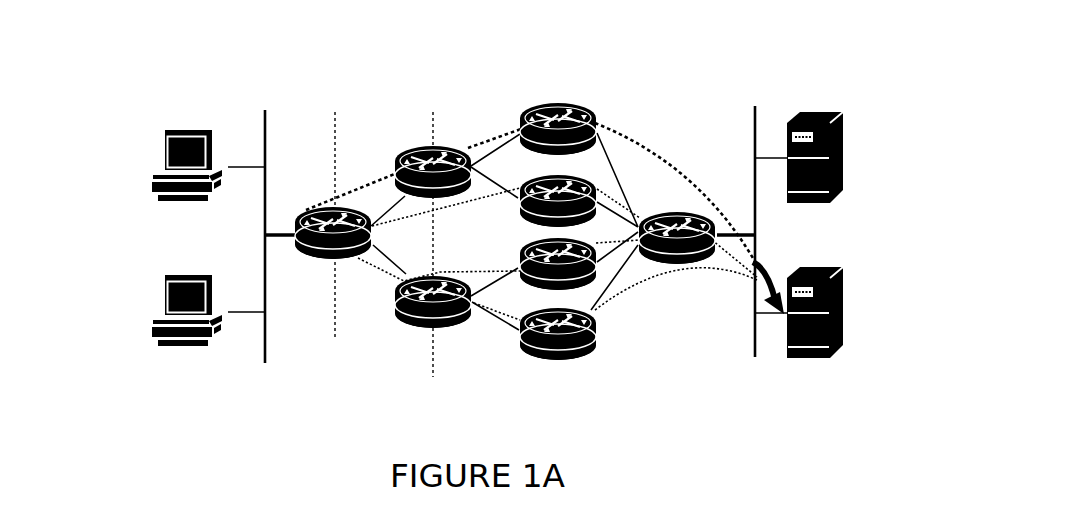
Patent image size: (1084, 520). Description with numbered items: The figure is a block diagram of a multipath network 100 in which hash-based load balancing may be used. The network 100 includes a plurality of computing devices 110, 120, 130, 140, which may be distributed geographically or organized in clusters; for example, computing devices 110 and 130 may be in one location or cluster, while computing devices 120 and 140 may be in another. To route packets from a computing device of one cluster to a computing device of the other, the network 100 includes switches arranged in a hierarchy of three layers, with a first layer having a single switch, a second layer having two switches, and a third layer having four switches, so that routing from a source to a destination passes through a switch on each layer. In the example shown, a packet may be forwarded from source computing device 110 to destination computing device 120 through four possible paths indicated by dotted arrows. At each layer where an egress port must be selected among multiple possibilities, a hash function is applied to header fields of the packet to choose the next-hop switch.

The multipath network 100 is at (818, 79).
The computing device 110 is at (170, 292).
The computing device 120 is at (843, 330).
The computing device 130 is at (175, 150).
The computing device 140 is at (843, 162).